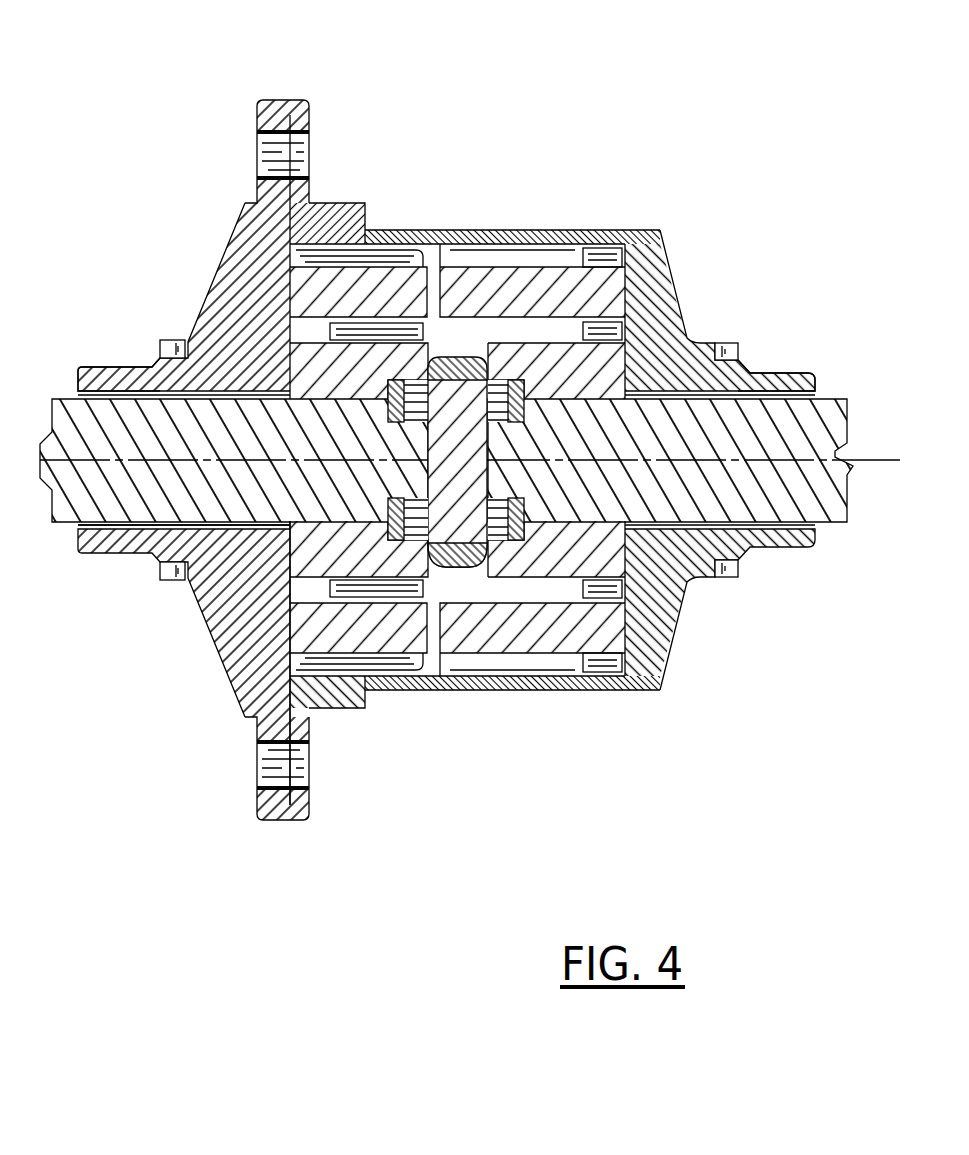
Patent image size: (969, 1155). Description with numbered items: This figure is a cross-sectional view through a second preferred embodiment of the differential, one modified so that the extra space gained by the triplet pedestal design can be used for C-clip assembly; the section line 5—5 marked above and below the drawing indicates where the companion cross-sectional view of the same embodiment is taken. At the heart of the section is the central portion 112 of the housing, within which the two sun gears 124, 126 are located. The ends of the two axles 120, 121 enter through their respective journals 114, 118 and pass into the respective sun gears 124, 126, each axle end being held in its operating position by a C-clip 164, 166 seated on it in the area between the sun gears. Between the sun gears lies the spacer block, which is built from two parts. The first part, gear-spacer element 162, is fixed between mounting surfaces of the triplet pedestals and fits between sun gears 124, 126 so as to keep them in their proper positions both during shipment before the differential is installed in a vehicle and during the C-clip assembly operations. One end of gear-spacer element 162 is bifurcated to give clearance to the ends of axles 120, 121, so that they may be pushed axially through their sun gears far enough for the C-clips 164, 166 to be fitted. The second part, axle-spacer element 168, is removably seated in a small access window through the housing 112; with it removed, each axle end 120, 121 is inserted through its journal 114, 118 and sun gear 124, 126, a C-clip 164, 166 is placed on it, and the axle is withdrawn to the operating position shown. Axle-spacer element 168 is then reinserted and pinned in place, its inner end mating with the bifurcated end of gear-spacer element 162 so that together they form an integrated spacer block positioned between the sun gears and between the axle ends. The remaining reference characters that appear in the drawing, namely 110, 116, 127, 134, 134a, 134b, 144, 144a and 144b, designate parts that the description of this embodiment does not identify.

The hub assembly 110 is at (493, 160).
The central portion of the housing 112 is at (505, 232).
The journal 114 is at (755, 375).
The flange member 116 is at (237, 273).
The journal 118 is at (147, 377).
The axle 120 is at (822, 503).
The axle 121 is at (78, 517).
The sun gear 124 is at (690, 580).
The sun gear 126 is at (253, 565).
The axis 127 is at (872, 458).
The housing 134 is at (612, 283).
The bearing 134a is at (380, 250).
The bearing 134b is at (606, 250).
The flange member 144 is at (280, 642).
The bearing 144a is at (557, 660).
The bearing 144b is at (312, 667).
The gear-spacer element 162 is at (453, 363).
The C-clip 164 is at (477, 568).
The C-clip 166 is at (432, 568).
The axle-spacer element 168 is at (465, 505).
The section line 5— 5 is at (500, 38).